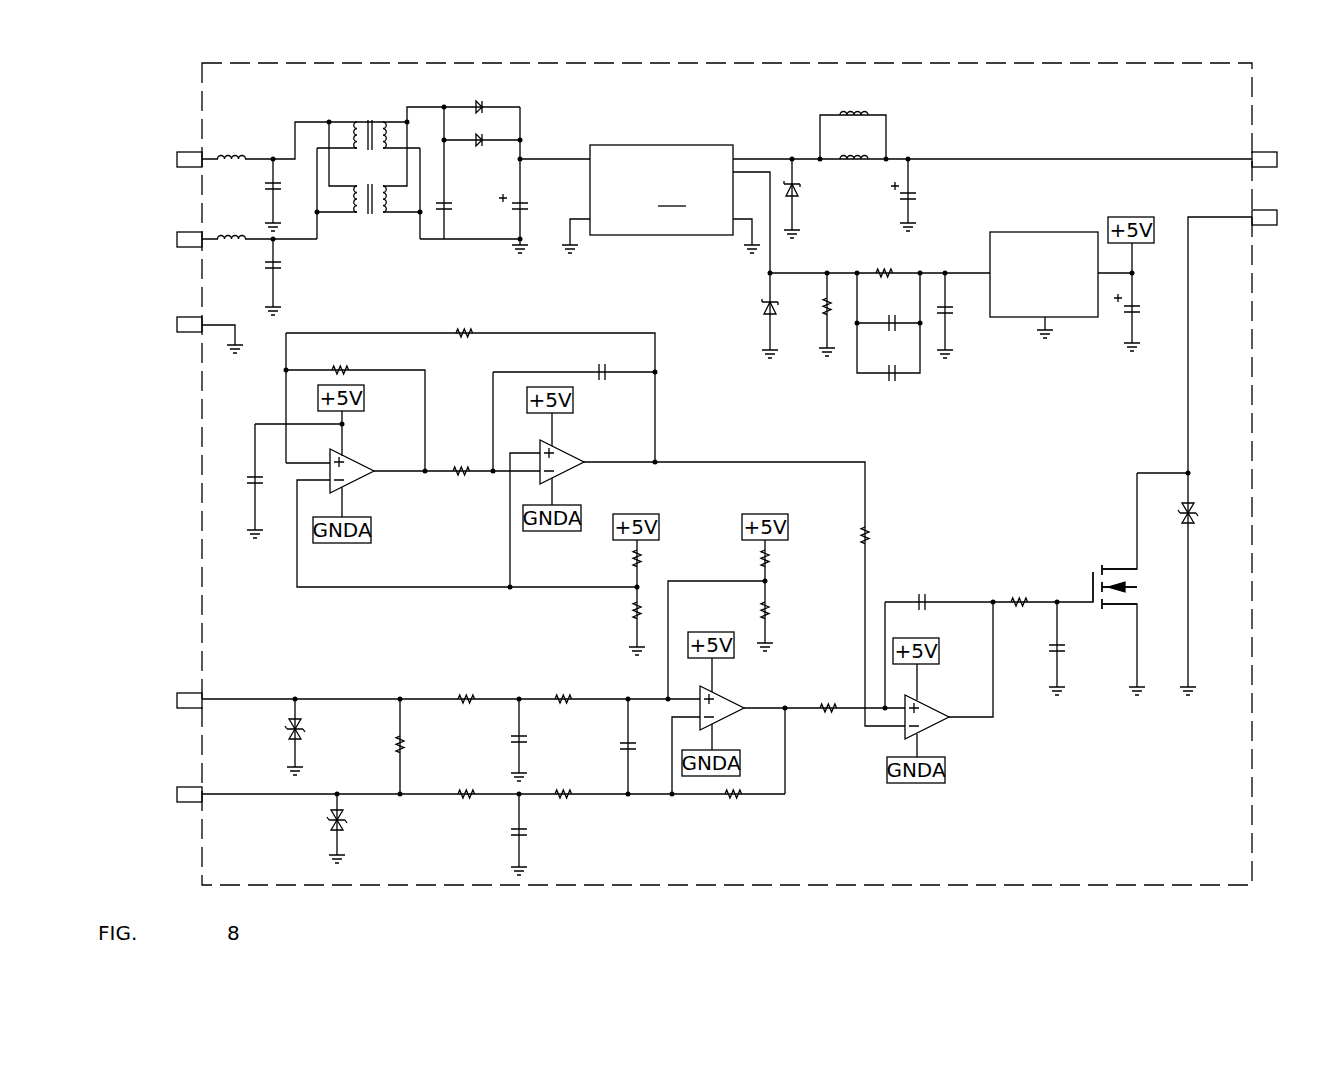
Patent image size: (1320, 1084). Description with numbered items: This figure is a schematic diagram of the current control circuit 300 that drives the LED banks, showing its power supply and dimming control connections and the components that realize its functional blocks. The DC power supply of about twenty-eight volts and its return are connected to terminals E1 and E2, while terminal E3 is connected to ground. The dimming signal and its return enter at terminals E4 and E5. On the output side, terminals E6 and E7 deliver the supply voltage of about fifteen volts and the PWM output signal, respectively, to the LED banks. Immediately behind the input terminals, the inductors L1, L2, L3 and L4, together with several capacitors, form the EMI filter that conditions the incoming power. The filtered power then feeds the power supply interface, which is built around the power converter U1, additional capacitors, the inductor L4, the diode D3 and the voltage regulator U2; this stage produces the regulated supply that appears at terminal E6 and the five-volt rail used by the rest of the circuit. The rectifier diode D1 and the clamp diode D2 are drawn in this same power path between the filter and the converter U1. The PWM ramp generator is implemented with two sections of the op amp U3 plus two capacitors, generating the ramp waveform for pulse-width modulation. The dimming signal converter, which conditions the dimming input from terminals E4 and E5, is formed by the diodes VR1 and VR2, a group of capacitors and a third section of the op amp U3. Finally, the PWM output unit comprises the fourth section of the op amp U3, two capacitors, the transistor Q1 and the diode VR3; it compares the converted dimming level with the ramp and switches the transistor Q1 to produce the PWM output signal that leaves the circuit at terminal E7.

The current control circuit 300 is at (706, 499).
The terminal E1 is at (187, 151).
The terminal E2 is at (187, 231).
The terminal E3 is at (187, 316).
The terminal E4 is at (187, 692).
The terminal E5 is at (187, 786).
The terminal E6 is at (1262, 151).
The terminal E7 is at (1262, 209).
The power converter U1 is at (661, 176).
The voltage regulator U2 is at (1044, 260).
The op amp U3 is at (658, 585).
The transistor Q1 is at (1115, 593).
The diode D1 is at (489, 126).
The diode D2 is at (808, 191).
The diode D3 is at (756, 309).
The diode VR1 is at (316, 731).
The diode VR2 is at (358, 821).
The diode VR3 is at (1209, 515).
The inductor L1 is at (232, 145).
The inductor L2 is at (232, 225).
The inductor L3 is at (371, 168).
The inductor L4 is at (858, 134).